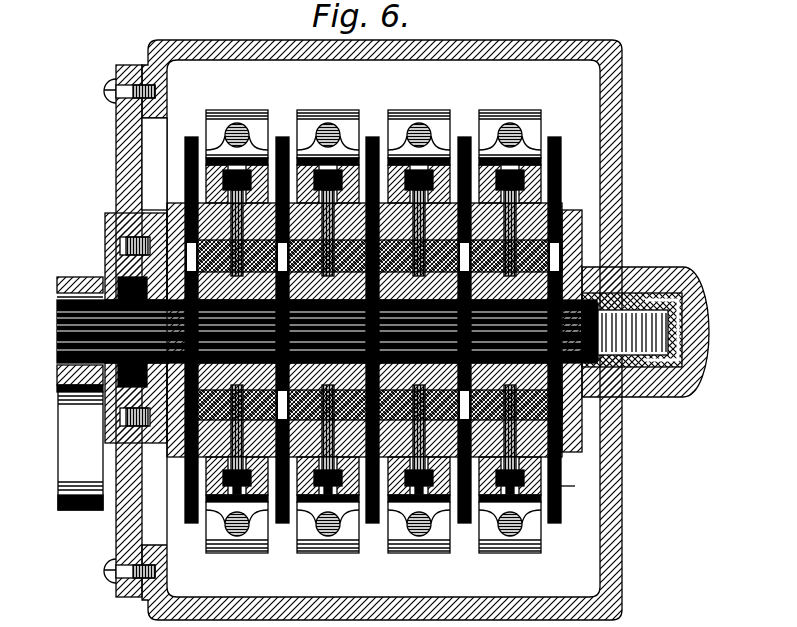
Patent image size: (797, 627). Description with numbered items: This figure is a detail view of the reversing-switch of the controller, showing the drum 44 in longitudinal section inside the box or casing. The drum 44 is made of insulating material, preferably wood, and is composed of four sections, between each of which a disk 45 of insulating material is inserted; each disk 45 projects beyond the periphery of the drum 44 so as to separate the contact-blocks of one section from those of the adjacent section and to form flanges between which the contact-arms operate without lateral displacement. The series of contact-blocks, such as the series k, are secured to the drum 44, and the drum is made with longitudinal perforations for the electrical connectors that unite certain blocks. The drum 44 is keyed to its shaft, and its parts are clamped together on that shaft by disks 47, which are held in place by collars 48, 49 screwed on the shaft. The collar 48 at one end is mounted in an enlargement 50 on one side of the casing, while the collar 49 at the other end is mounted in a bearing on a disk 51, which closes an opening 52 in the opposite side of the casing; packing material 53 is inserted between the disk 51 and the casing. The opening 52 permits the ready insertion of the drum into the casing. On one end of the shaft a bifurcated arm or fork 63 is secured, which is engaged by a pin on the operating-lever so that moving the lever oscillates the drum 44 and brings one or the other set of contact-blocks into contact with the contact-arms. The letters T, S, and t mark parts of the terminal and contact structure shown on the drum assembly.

The drum 44 is at (382, 330).
The disk of insulating material 45 is at (376, 321).
The disk 47 is at (180, 466).
The collar 48 is at (632, 290).
The collar 49 is at (100, 283).
The enlargement 50 is at (656, 329).
The disk 51 is at (124, 155).
The opening 52 is at (154, 164).
The packing material 53 is at (133, 70).
The bifurcated arm or fork 63 is at (65, 393).
The terminal contacts T is at (390, 109).
The lower terminal contacts S is at (392, 553).
The series of contact-blocks k is at (573, 488).
The terminal lug t is at (311, 184).